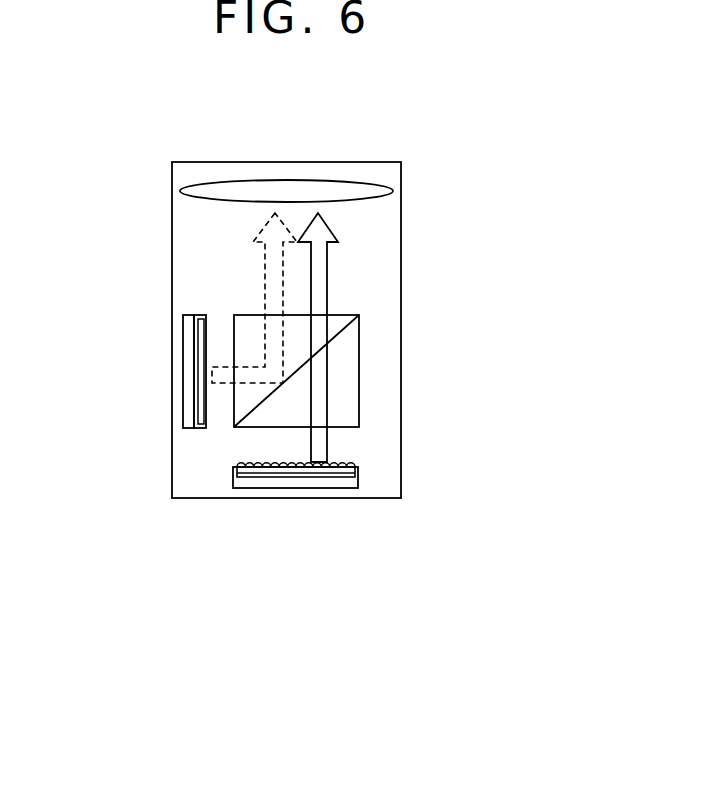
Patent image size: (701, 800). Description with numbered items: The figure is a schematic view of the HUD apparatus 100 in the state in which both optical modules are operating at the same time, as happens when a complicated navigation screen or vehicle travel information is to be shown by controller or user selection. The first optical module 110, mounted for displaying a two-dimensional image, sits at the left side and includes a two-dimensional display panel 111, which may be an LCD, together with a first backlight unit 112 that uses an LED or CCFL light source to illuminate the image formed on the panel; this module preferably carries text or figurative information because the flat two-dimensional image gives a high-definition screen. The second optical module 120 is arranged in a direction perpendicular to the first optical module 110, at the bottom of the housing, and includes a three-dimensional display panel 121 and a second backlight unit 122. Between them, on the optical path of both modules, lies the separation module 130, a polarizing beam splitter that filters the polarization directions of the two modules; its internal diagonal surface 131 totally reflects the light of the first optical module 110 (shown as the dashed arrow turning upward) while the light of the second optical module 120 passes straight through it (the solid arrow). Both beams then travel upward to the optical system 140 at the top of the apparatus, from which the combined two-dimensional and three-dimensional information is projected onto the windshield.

The HUD apparatus 100 is at (401, 256).
The first optical module 110 is at (119, 371).
The 2D display panel 111 is at (195, 345).
The first backlight unit 112 is at (190, 383).
The second optical module 120 is at (298, 543).
The 3D display panel 121 is at (270, 473).
The second backlight unit 122 is at (337, 482).
The separation module 130 is at (362, 367).
The reflective surface 131 is at (352, 320).
The optical system 140 is at (367, 190).